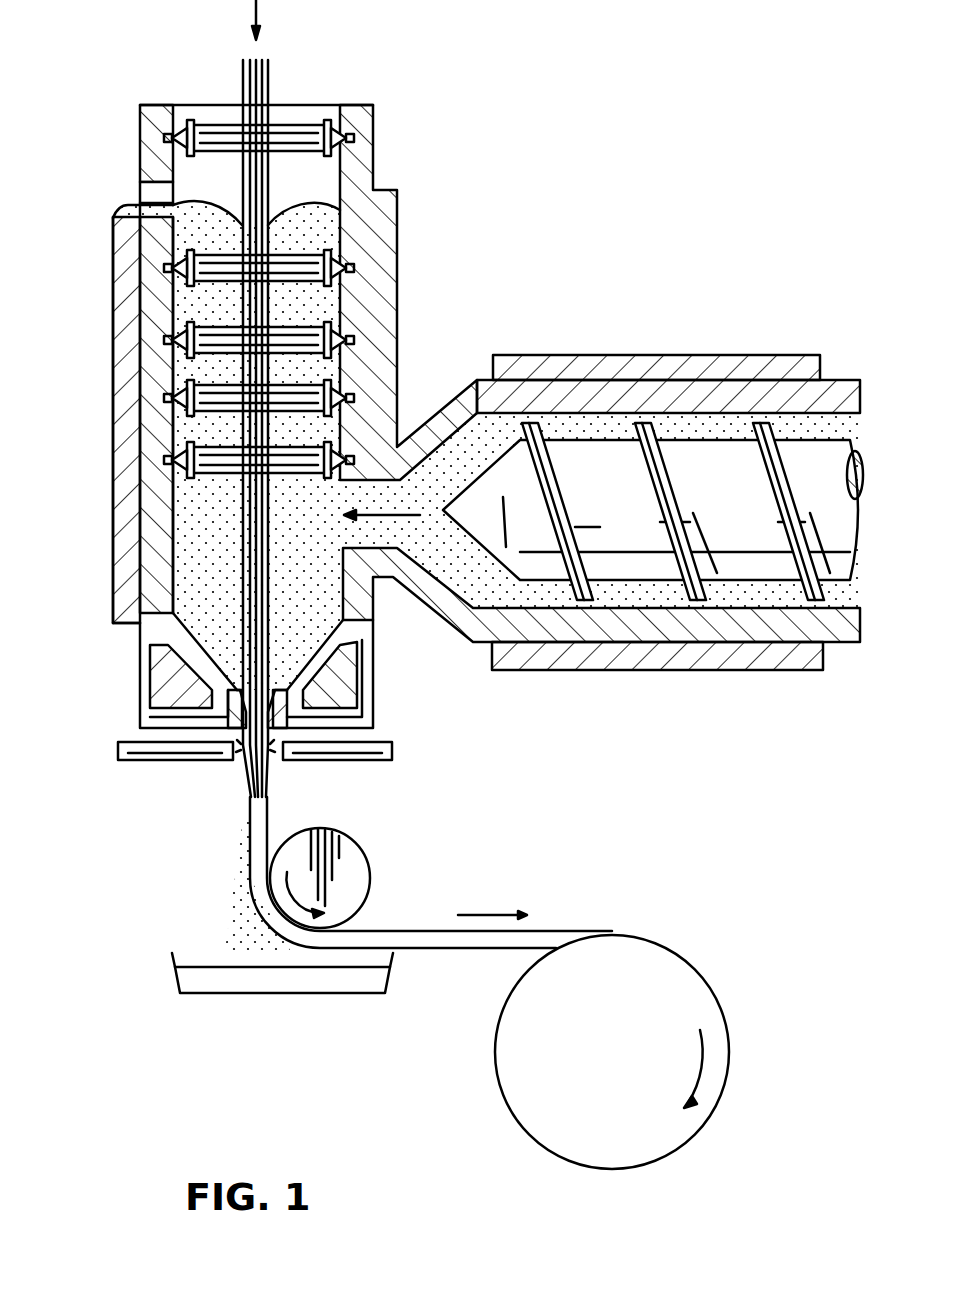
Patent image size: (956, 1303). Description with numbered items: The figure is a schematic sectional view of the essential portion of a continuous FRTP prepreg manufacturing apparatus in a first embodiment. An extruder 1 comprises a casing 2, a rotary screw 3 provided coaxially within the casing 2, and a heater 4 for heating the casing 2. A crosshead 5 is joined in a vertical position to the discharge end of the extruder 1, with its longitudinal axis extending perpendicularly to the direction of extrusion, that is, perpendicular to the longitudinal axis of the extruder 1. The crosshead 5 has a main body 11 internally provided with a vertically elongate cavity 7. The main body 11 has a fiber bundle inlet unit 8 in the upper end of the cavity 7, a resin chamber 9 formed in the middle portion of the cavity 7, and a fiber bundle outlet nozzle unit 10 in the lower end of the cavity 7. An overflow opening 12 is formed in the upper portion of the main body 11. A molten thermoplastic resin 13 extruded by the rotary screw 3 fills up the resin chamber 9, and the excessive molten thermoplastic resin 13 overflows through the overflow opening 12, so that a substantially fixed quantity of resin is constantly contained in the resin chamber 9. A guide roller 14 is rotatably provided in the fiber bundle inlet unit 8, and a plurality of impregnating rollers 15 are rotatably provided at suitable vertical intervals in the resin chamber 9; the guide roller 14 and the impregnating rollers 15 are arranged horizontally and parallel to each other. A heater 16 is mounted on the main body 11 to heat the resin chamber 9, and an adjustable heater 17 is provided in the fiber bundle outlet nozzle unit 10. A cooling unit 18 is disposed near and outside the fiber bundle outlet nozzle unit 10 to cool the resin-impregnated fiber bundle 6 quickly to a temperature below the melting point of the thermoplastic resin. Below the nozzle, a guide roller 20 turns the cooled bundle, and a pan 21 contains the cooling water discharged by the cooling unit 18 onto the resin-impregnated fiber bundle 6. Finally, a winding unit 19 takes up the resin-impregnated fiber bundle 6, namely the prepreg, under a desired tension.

The extruder 1 is at (754, 345).
The casing 2 is at (643, 392).
The rotary screw 3 is at (763, 588).
The heater 4 is at (670, 672).
The crosshead 5 is at (113, 408).
The resin-impregnated fiber bundle 6 is at (270, 85).
The cavity 7 is at (175, 549).
The fiber bundle inlet unit 8 is at (209, 116).
The resin chamber 9 is at (197, 604).
The fiber bundle outlet nozzle unit 10 is at (228, 718).
The main body 11 is at (150, 328).
The overflow opening 12 is at (145, 192).
The molten thermoplastic resin 13 is at (195, 510).
The guide roller 14 is at (307, 128).
The impregnating rollers 15 is at (330, 262).
The heater 16 is at (118, 305).
The adjustable heater 17 is at (343, 683).
The cooling unit 18 is at (163, 762).
The winding unit 19 is at (512, 1088).
The guide roller 20 is at (355, 866).
The pan 21 is at (262, 996).